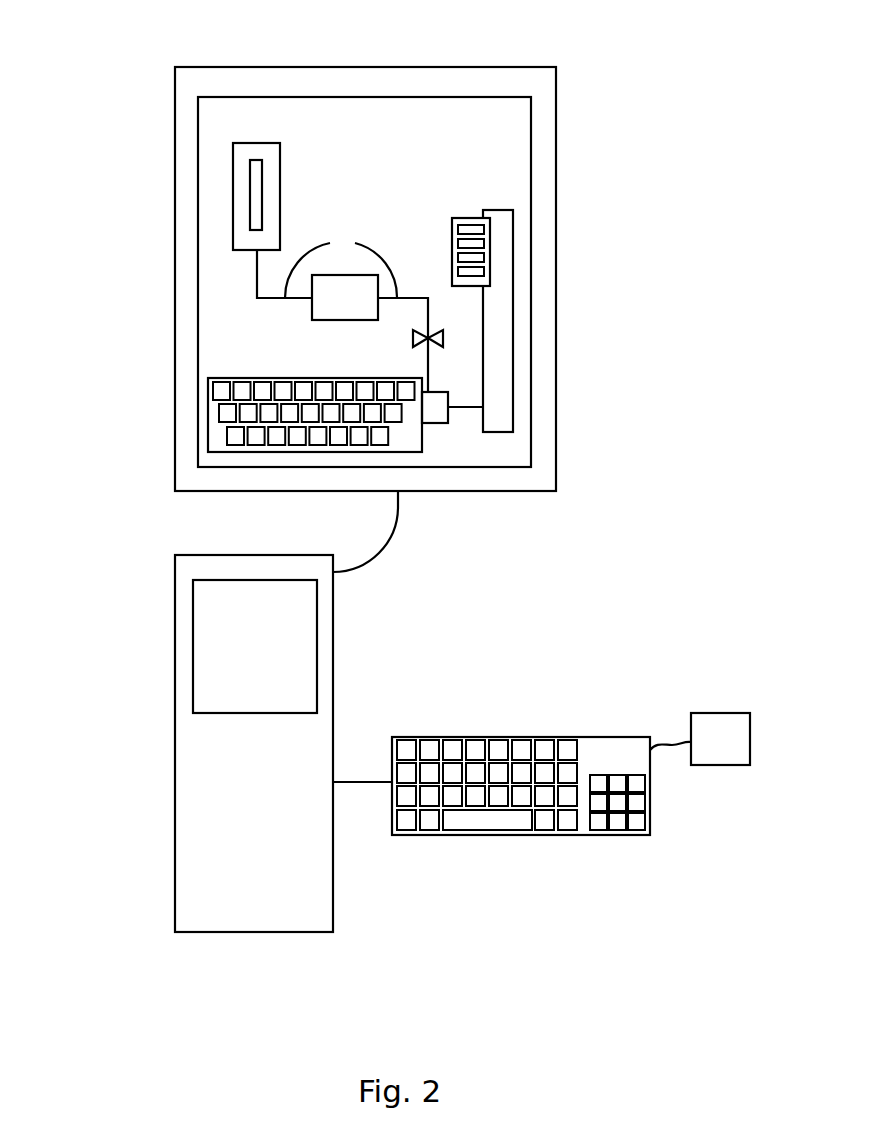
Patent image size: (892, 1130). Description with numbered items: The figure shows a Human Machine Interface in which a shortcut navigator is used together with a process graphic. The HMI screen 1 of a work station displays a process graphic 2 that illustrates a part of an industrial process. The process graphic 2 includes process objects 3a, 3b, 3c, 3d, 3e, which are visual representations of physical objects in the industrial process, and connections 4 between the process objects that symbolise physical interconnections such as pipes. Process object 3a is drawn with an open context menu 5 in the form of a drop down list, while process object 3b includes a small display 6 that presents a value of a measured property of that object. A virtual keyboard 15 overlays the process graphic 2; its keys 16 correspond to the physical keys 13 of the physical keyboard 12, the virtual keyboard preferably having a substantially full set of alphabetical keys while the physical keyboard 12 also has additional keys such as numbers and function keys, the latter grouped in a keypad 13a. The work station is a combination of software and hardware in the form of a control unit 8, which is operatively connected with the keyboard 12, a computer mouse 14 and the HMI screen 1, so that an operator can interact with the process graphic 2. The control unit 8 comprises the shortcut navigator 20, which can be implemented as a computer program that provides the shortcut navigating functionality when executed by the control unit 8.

The HMI screen 1 is at (197, 73).
The process graphic 2 is at (512, 105).
The process object 3a is at (507, 321).
The process object 3b is at (275, 218).
The process object 3c is at (317, 317).
The process object 3d is at (418, 342).
The process object 3e is at (440, 423).
The connections 4 is at (342, 311).
The context menu 5 is at (457, 218).
The small display 6 is at (258, 182).
The control unit 8 is at (322, 923).
The keyboard 12 is at (540, 794).
The physical keys 13 is at (465, 738).
The numeric keypad 13a is at (578, 750).
The computer mouse 14 is at (743, 752).
The virtual keyboard 15 is at (208, 435).
The keys 16 is at (212, 385).
The shortcut navigator 20 is at (303, 662).